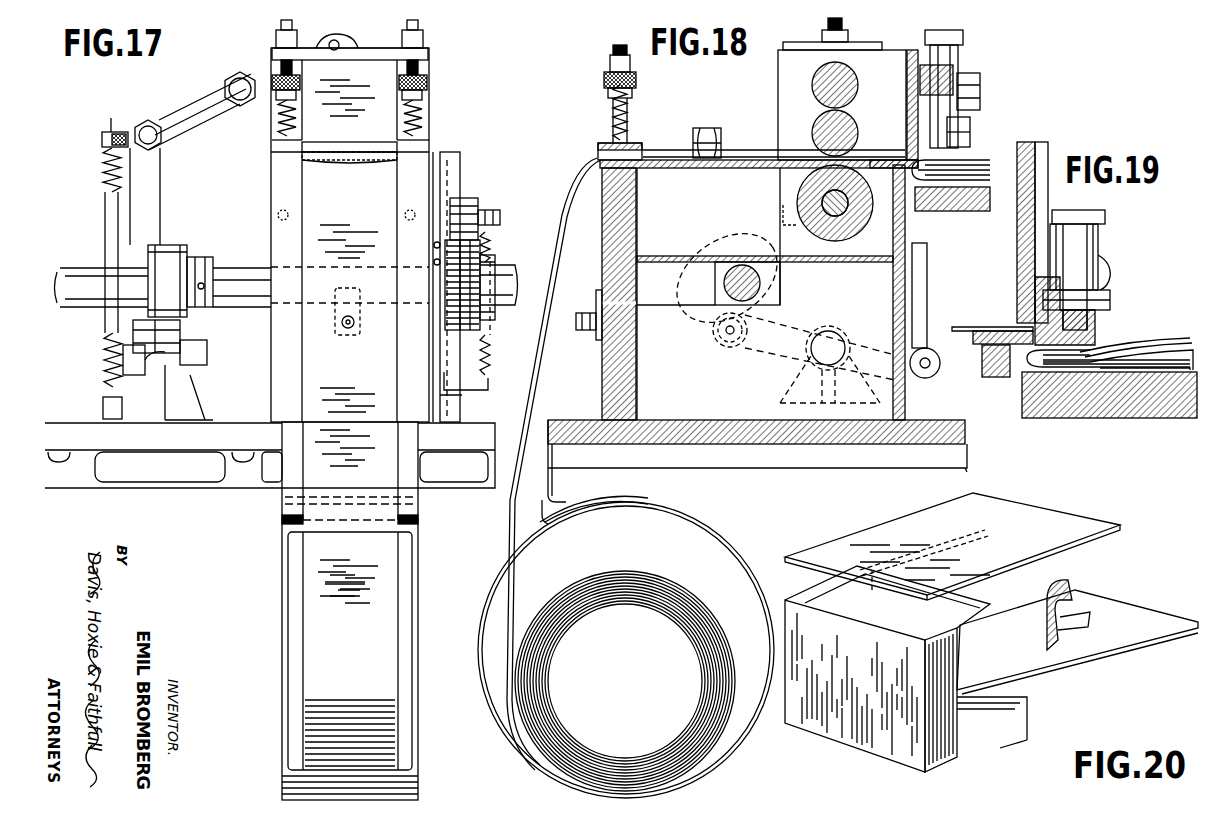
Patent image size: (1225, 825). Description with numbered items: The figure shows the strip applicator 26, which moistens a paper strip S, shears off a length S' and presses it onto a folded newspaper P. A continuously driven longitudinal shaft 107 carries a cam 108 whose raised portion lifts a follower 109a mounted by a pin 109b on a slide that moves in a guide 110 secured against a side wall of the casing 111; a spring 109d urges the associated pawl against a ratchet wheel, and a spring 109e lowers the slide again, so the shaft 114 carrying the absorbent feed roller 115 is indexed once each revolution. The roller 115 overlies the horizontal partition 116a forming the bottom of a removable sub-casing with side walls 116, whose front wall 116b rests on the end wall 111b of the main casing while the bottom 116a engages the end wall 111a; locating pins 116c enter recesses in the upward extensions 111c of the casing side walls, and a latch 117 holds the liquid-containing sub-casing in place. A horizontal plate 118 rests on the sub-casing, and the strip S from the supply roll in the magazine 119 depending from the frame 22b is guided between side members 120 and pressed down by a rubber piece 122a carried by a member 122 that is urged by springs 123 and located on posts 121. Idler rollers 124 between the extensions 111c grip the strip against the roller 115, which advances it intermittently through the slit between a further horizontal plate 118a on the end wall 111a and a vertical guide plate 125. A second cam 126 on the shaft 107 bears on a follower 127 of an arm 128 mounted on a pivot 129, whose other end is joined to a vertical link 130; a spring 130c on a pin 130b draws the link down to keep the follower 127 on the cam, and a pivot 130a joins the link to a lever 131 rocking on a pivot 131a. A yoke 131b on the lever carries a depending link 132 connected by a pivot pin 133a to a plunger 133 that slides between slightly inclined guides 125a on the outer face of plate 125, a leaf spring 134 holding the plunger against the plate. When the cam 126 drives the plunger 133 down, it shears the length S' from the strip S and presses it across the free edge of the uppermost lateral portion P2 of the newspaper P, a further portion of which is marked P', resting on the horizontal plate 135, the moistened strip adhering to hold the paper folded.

In FIG. 17, the strip applicator 26 is at (234, 519).
In FIG. 18, the strip applicator 26 is at (572, 96).
In FIG. 17, the longitudinal shaft 107 is at (244, 280).
In FIG. 18, the longitudinal shaft 107 is at (712, 310).
In FIG. 17, the cam 108 is at (467, 296).
In FIG. 17, the follower 109a is at (468, 205).
In FIG. 17, the pin 109b is at (498, 219).
In FIG. 17, the spring 109d is at (450, 188).
In FIG. 17, the spring 109e is at (488, 354).
In FIG. 17, the guide 110 is at (440, 389).
In FIG. 17, the casing 111 is at (302, 395).
In FIG. 18, the casing 111 is at (762, 414).
In FIG. 18, the end wall 111a is at (905, 400).
In FIG. 18, the end wall 111b is at (604, 367).
In FIG. 18, the upward extensions 111c is at (780, 78).
In FIG. 18, the longitudinal shaft 114 is at (826, 201).
In FIG. 18, the feed roller 115 is at (850, 238).
In FIG. 18, the sub-casing 116 is at (719, 178).
In FIG. 20, the sub-casing 116 is at (960, 582).
In FIG. 18, the horizontal partition 116a is at (802, 262).
In FIG. 20, the horizontal partition 116a is at (1143, 635).
In FIG. 18, the front wall 116b is at (606, 240).
In FIG. 20, the front wall 116b is at (835, 738).
In FIG. 17, the locating pins 116c is at (278, 213).
In FIG. 18, the locating pins 116c is at (783, 205).
In FIG. 20, the locating pins 116c is at (1070, 612).
In FIG. 17, the latch 117 is at (335, 325).
In FIG. 18, the latch 117 is at (596, 292).
In FIG. 18, the horizontal plate 118 is at (664, 160).
In FIG. 20, the horizontal plate 118 is at (1070, 518).
In FIG. 18, the horizontal plate 118a is at (881, 160).
In FIG. 17, the magazine 119 is at (288, 720).
In FIG. 18, the magazine 119 is at (497, 716).
In FIG. 17, the side members 120 is at (275, 160).
In FIG. 18, the side members 120 is at (753, 152).
In FIG. 17, the posts 121 is at (280, 58).
In FIG. 18, the posts 121 is at (612, 55).
In FIG. 17, the member 122 is at (313, 144).
In FIG. 18, the member 122 is at (602, 142).
In FIG. 17, the piece of rubber 122a is at (350, 156).
In FIG. 18, the piece of rubber 122a is at (600, 150).
In FIG. 17, the springs 123 is at (278, 118).
In FIG. 18, the springs 123 is at (630, 116).
In FIG. 18, the idler rollers 124 is at (830, 104).
In FIG. 18, the vertical guide plate 125 is at (911, 60).
In FIG. 19, the vertical guide plate 125 is at (1030, 145).
In FIG. 19, the guides 125a is at (1047, 164).
In FIG. 17, the second cam 126 is at (172, 245).
In FIG. 18, the second cam 126 is at (690, 308).
In FIG. 17, the follower 127 is at (180, 332).
In FIG. 18, the follower 127 is at (720, 348).
In FIG. 18, the arm 128 is at (752, 355).
In FIG. 17, the pivot 129 is at (200, 362).
In FIG. 18, the pivot 129 is at (855, 403).
In FIG. 17, the vertical link 130 is at (130, 221).
In FIG. 18, the vertical link 130 is at (923, 278).
In FIG. 18, the pivot 130a is at (968, 130).
In FIG. 17, the pin 130b is at (110, 134).
In FIG. 17, the spring 130c is at (106, 376).
In FIG. 17, the lever 131 is at (165, 118).
In FIG. 17, the pivot 131a is at (225, 89).
In FIG. 17, the yoke 131b is at (336, 48).
In FIG. 18, the yoke 131b is at (960, 36).
In FIG. 19, the yoke 131b is at (1098, 215).
In FIG. 18, the depending link 132 is at (960, 56).
In FIG. 19, the depending link 132 is at (1076, 264).
In FIG. 18, the plunger 133 is at (928, 94).
In FIG. 19, the plunger 133 is at (1090, 332).
In FIG. 18, the pivot pin 133a is at (980, 88).
In FIG. 19, the pivot pin 133a is at (1110, 300).
In FIG. 19, the leaf spring 134 is at (1110, 274).
In FIG. 18, the horizontal plate 135 is at (931, 192).
In FIG. 19, the horizontal plate 135 is at (1155, 395).
In FIG. 18, the frame 22b is at (718, 444).
In FIG. 17, the strip of paper S is at (386, 572).
In FIG. 18, the strip of paper S is at (737, 474).
In FIG. 18, the sheared strip length S' is at (960, 148).
In FIG. 19, the sheared strip length S' is at (1116, 407).
In FIG. 18, the folded newspaper P is at (977, 214).
In FIG. 19, the folded newspaper P is at (1145, 408).
In FIG. 19, the folded sheet edge P' is at (1107, 402).
In FIG. 18, the uppermost lateral portion P2 is at (992, 170).
In FIG. 19, the uppermost lateral portion P2 is at (1172, 340).